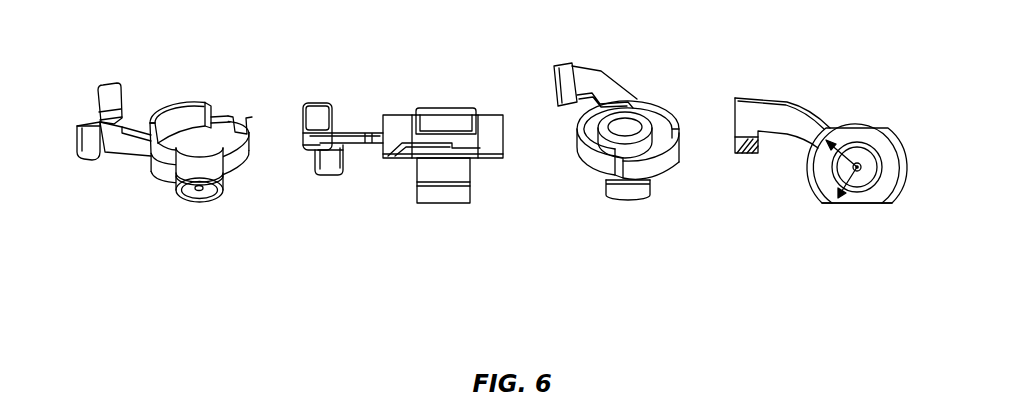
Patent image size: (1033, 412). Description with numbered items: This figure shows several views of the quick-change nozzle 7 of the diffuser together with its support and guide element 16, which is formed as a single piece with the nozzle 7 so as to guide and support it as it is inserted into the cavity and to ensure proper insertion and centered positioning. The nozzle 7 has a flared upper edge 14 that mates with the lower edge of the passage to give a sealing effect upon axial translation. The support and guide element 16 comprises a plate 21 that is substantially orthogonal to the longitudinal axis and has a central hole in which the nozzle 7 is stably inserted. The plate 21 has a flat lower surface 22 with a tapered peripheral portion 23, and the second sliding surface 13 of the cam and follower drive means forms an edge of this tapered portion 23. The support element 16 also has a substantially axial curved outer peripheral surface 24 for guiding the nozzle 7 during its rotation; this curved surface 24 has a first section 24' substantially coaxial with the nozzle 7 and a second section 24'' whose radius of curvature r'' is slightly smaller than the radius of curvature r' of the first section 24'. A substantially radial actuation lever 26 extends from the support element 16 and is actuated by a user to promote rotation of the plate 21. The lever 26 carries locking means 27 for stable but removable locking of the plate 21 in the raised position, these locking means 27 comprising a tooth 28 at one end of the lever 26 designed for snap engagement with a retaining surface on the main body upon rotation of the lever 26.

The nozzle 7 is at (199, 196).
The second sliding surface 13 is at (177, 133).
The flared upper edge 14 is at (465, 118).
The support and guide element 16 is at (150, 174).
The plate 21 is at (235, 130).
The flat lower surface 22 is at (231, 168).
The tapered peripheral portion 23 is at (222, 116).
The curved outer peripheral surface 24 is at (541, 131).
The first section 24' is at (511, 119).
The second section 24'' is at (521, 140).
The actuation lever 26 is at (92, 122).
The locking means 27 is at (100, 92).
The tooth 28 is at (107, 152).
The radius of curvature of the first section r' is at (852, 126).
The radius of curvature of the second section r'' is at (855, 204).